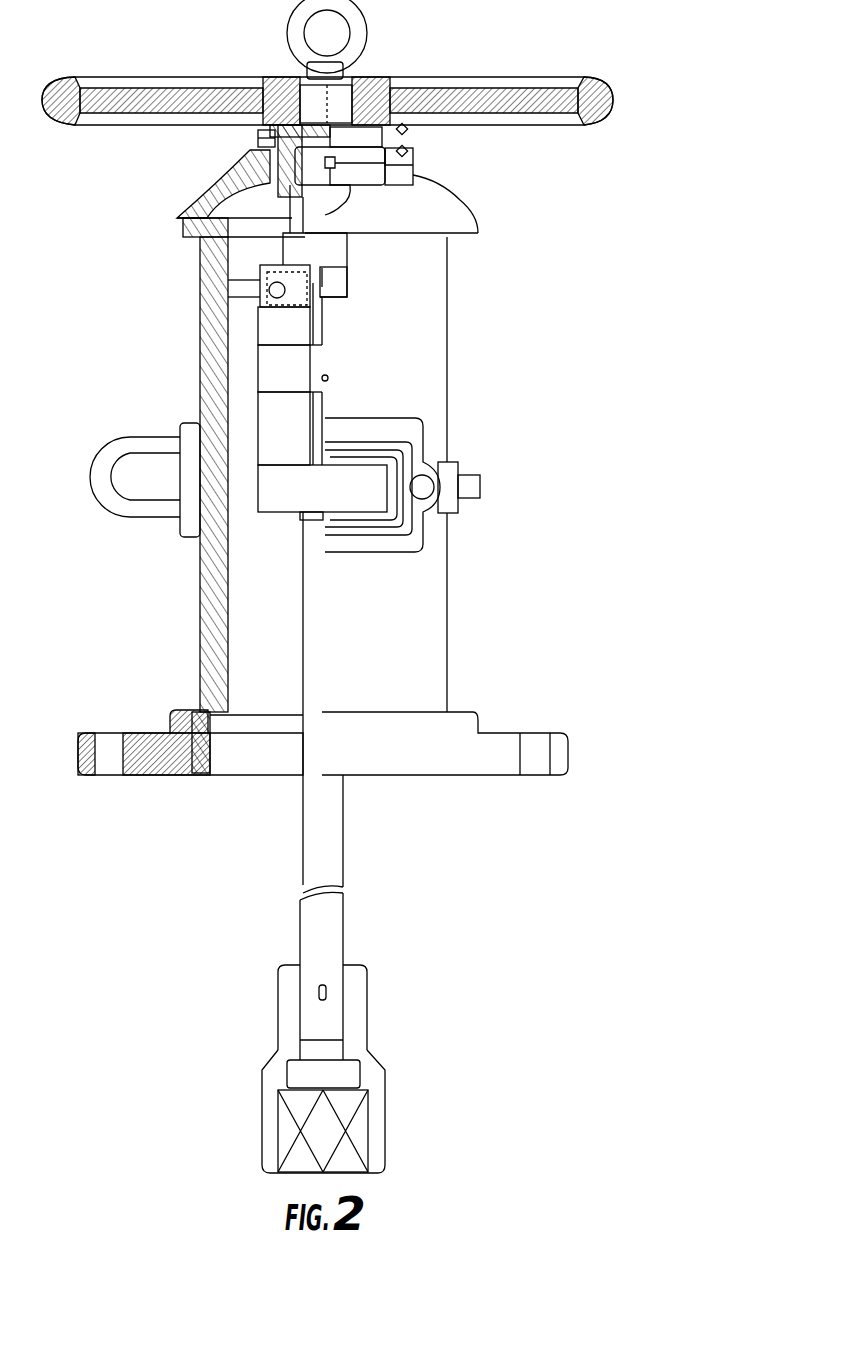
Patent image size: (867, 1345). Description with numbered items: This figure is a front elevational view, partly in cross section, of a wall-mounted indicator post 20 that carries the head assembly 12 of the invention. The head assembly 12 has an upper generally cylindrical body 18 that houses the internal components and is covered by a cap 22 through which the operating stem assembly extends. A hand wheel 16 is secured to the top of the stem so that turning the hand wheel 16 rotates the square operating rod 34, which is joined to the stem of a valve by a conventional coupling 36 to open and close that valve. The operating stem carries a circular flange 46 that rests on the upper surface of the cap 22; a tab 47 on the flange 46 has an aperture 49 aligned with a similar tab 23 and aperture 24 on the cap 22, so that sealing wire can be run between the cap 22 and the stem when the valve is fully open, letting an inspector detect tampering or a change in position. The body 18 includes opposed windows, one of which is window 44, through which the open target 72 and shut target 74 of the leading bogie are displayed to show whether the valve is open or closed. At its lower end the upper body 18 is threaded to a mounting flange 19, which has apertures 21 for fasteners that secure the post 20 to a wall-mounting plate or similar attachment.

The head assembly 12 is at (398, 474).
The hand wheel 16 is at (467, 88).
The upper generally cylindrical body 18 is at (447, 404).
The mounting flange 19 is at (480, 722).
The wall-mounted indicator post 20 is at (632, 500).
The apertures 21 is at (111, 732).
The cap 22 is at (467, 222).
The tab 23 is at (400, 170).
The aperture 24 is at (400, 162).
The operating rod 34 is at (325, 830).
The coupling 36 is at (372, 1032).
The window 44 is at (383, 480).
The circular flange 46 is at (258, 133).
The tab 47 is at (407, 133).
The aperture 49 is at (412, 150).
The open target 72 is at (260, 358).
The shut target 74 is at (258, 492).